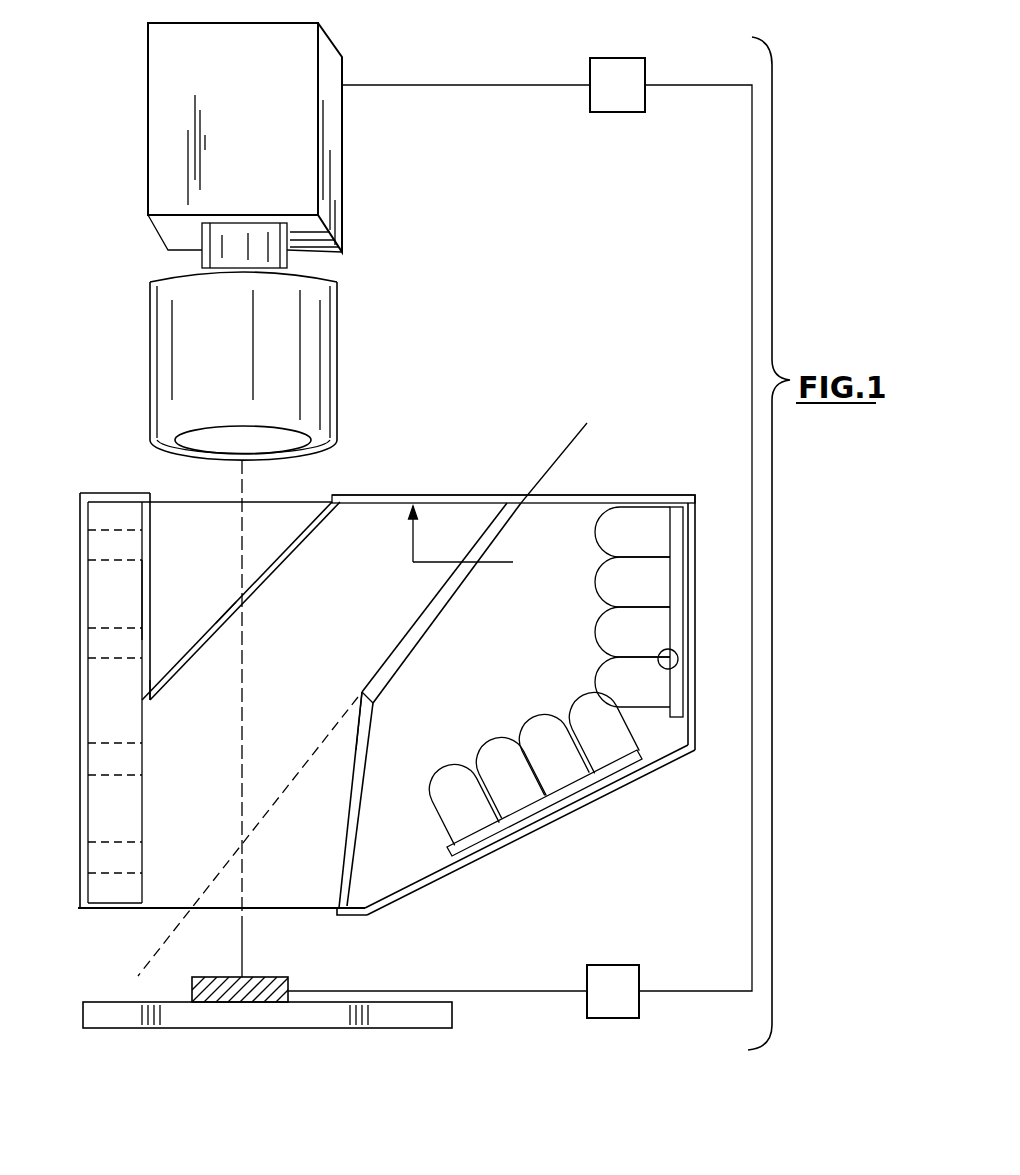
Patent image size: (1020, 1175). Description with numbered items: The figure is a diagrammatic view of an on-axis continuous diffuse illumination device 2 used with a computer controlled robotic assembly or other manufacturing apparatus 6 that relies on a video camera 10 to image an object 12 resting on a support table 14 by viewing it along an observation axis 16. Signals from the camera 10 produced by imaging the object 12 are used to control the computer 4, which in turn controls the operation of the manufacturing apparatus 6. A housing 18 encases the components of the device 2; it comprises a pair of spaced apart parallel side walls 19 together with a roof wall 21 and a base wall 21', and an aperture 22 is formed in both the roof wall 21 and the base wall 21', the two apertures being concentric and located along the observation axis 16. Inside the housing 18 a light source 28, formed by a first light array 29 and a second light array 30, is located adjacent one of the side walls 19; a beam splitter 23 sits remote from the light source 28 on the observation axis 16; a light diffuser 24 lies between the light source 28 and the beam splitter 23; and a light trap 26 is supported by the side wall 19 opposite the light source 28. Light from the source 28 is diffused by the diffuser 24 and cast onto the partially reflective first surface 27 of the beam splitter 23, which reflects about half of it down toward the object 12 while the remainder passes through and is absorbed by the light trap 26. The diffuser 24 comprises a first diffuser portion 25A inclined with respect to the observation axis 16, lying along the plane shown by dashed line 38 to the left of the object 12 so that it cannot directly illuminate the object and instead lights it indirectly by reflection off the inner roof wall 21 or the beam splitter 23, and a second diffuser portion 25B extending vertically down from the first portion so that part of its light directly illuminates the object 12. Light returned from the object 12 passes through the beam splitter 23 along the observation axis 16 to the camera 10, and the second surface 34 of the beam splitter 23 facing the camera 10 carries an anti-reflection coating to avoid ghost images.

The on-axis continuous diffuse illumination device 2 is at (687, 480).
The computer 4 is at (628, 101).
The robotic assembly or other manufacturing apparatus 6 is at (602, 1006).
The video camera 10 is at (346, 190).
The object 12 is at (253, 968).
The support table 14 is at (455, 1015).
The observation axis 16 is at (240, 975).
The housing 18 is at (714, 615).
The side walls 19 is at (86, 720).
The roof wall 21 is at (513, 512).
The base wall 21' is at (399, 919).
The aperture 22 is at (310, 482).
The beam splitter 23 is at (156, 660).
The light diffuser 24 is at (318, 693).
The first diffuser portion 25A is at (487, 530).
The second diffuser portion 25B is at (344, 852).
The light trap 26 is at (128, 590).
The partially reflective first surface 27 is at (283, 562).
The light source 28 is at (544, 555).
The first light array 29 is at (677, 660).
The second light array 30 is at (560, 785).
The second surface 34 is at (226, 612).
The dashed line 38 is at (157, 952).